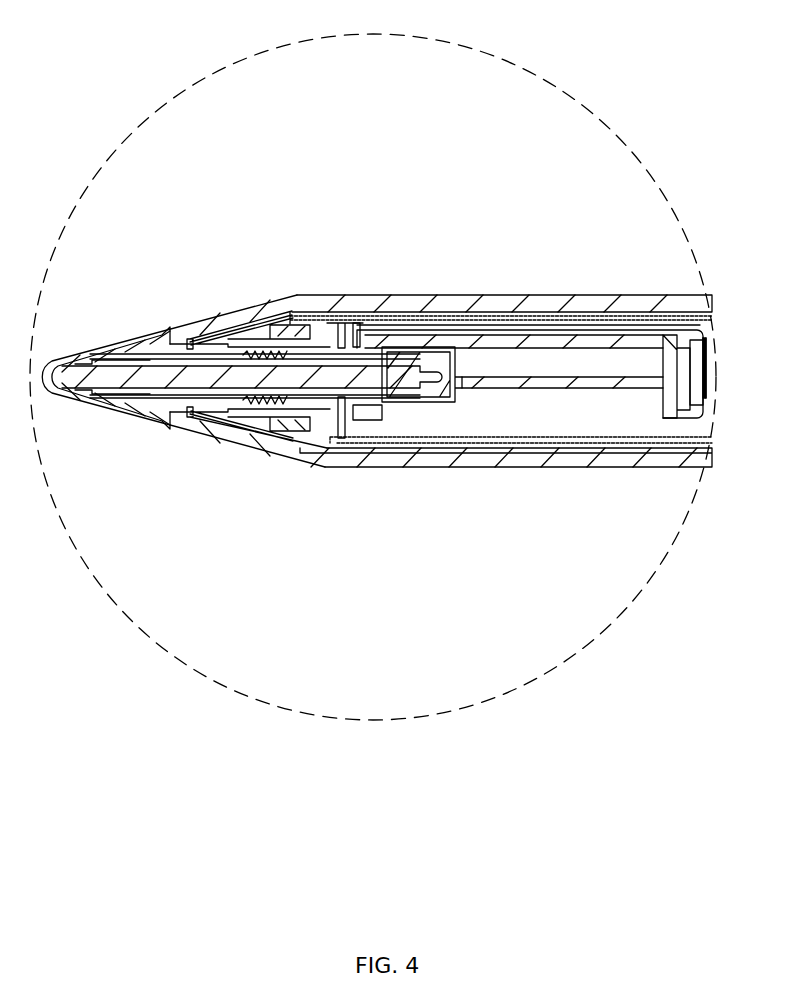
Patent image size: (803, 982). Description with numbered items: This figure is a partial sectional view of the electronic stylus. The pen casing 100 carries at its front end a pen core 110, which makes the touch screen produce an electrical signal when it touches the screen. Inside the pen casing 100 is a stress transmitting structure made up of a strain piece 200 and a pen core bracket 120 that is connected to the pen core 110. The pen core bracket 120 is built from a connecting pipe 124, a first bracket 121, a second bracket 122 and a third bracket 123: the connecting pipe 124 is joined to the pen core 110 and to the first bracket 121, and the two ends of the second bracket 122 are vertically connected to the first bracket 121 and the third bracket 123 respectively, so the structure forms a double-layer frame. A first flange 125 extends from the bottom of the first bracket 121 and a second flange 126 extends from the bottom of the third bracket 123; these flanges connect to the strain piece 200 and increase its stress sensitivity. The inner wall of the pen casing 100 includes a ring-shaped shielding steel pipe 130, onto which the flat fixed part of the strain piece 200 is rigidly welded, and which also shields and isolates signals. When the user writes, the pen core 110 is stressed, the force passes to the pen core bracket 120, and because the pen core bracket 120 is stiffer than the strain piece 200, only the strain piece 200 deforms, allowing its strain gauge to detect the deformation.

The pen casing 100 is at (220, 410).
The pen core 110 is at (113, 400).
The pen core bracket 120 is at (515, 582).
The first bracket 121 is at (378, 402).
The second bracket 122 is at (477, 340).
The third bracket 123 is at (677, 400).
The connecting pipe 124 is at (325, 400).
The first flange 125 is at (358, 398).
The second flange 126 is at (698, 418).
The shielding steel pipe 130 is at (373, 317).
The strain piece 200 is at (525, 327).